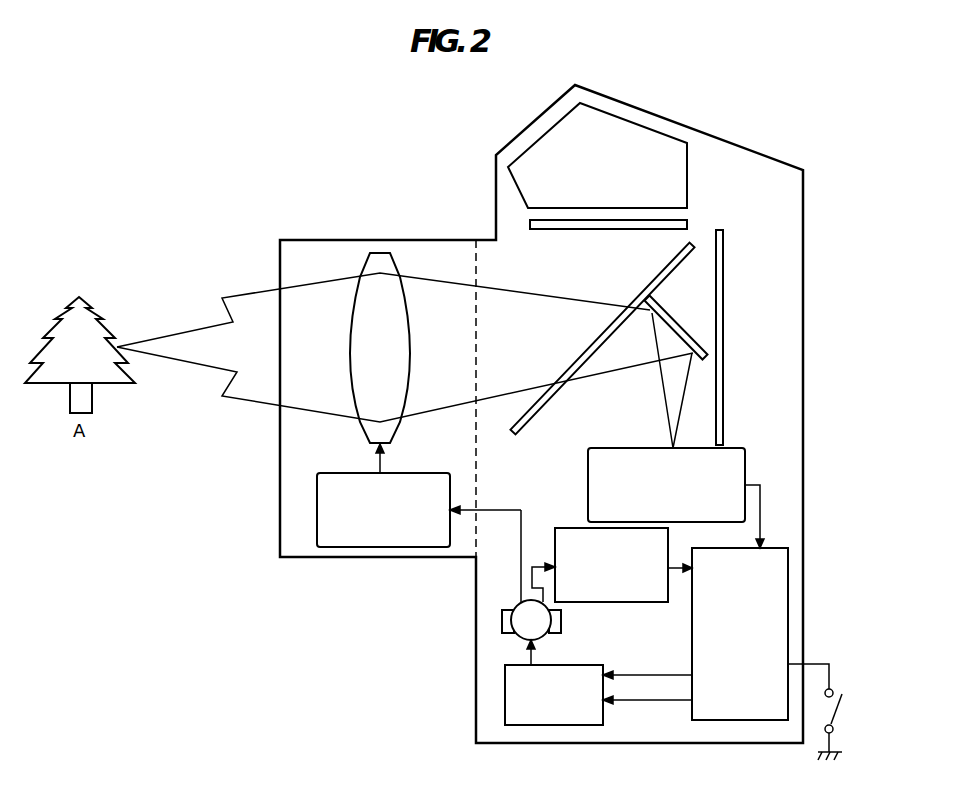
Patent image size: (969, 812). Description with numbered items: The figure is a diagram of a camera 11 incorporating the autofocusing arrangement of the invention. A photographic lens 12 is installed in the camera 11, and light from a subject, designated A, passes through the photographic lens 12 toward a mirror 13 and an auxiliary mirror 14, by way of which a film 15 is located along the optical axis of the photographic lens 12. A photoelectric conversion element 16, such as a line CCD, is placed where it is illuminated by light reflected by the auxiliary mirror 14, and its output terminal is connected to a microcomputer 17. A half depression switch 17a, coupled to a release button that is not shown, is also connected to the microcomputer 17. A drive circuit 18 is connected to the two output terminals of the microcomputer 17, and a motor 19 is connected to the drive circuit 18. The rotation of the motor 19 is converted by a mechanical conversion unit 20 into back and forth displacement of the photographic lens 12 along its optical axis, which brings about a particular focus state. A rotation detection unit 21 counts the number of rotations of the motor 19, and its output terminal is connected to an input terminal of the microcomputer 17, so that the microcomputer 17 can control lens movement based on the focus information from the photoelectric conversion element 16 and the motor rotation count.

The camera 11 is at (742, 743).
The photographic lens 12 is at (398, 268).
The mirror 13 is at (647, 290).
The auxiliary mirror 14 is at (692, 338).
The film 15 is at (723, 267).
The photoelectric conversion element 16 is at (613, 448).
The microcomputer 17 is at (770, 548).
The half depression switch 17a is at (840, 690).
The drive circuit 18 is at (575, 665).
The motor 19 is at (502, 620).
The mechanical conversion unit 20 is at (418, 473).
The rotation detection unit 21 is at (568, 528).